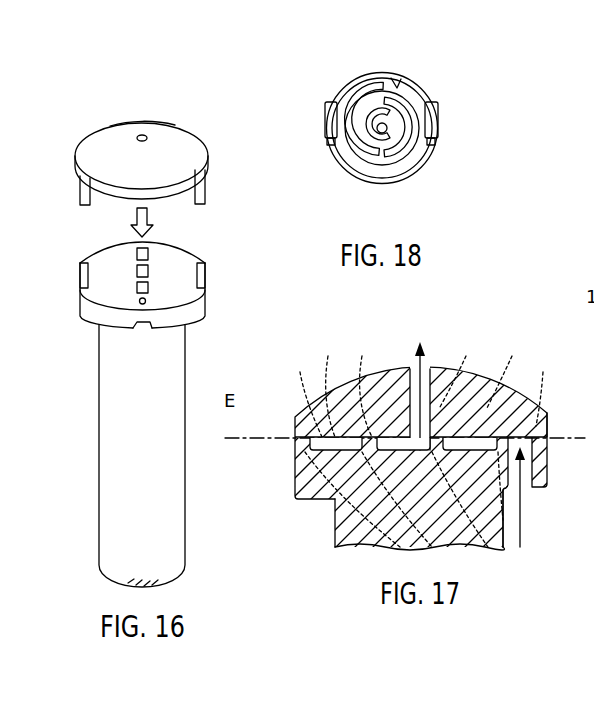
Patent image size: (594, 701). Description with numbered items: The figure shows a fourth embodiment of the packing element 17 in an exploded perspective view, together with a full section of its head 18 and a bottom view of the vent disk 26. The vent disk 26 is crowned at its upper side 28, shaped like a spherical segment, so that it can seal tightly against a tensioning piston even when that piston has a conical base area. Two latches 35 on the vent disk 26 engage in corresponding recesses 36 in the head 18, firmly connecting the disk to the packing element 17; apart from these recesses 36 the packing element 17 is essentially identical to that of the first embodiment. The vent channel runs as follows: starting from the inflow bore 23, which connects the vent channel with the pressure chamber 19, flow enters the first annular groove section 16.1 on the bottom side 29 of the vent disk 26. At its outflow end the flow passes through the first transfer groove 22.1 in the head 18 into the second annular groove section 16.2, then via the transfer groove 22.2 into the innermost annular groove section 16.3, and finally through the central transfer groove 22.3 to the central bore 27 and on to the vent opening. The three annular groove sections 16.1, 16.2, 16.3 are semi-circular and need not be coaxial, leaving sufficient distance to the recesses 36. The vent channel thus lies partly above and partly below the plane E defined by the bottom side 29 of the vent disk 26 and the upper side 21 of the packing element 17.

In FIG. 18, the first annular groove section 16.1 is at (368, 182).
In FIG. 17, the first annular groove section 16.1 is at (298, 395).
In FIG. 18, the second annular groove section 16.2 is at (406, 150).
In FIG. 17, the second annular groove section 16.2 is at (366, 386).
In FIG. 18, the innermost annular groove section 16.3 is at (372, 82).
In FIG. 17, the innermost annular groove section 16.3 is at (506, 373).
In FIG. 16, the packing element 17 is at (99, 478).
In FIG. 17, the packing element 17 is at (334, 546).
In FIG. 16, the head 18 is at (80, 300).
In FIG. 17, the pressure chamber 19 is at (296, 444).
In FIG. 16, the upper side 21 is at (90, 250).
In FIG. 17, the upper side 21 is at (548, 426).
In FIG. 16, the first transfer groove 22.1 is at (151, 223).
In FIG. 17, the first transfer groove 22.1 is at (328, 386).
In FIG. 16, the transfer groove 22.2 is at (148, 302).
In FIG. 17, the transfer groove 22.2 is at (547, 389).
In FIG. 16, the central transfer groove 22.3 is at (150, 255).
In FIG. 17, the central transfer groove 22.3 is at (411, 366).
In FIG. 16, the inflow bore 23 is at (135, 312).
In FIG. 17, the inflow bore 23 is at (523, 489).
In FIG. 16, the vent disk 26 is at (75, 142).
In FIG. 17, the vent disk 26 is at (297, 418).
In FIG. 16, the central bore 27 is at (144, 134).
In FIG. 18, the central bore 27 is at (388, 125).
In FIG. 17, the central bore 27 is at (422, 346).
In FIG. 16, the upper side 28 is at (95, 128).
In FIG. 18, the upper side 28 is at (413, 81).
In FIG. 17, the upper side 28 is at (461, 371).
In FIG. 18, the bottom side 29 is at (410, 77).
In FIG. 17, the bottom side 29 is at (295, 462).
In FIG. 16, the latches 35 is at (80, 196).
In FIG. 18, the latches 35 is at (327, 104).
In FIG. 16, the recesses 36 is at (80, 278).